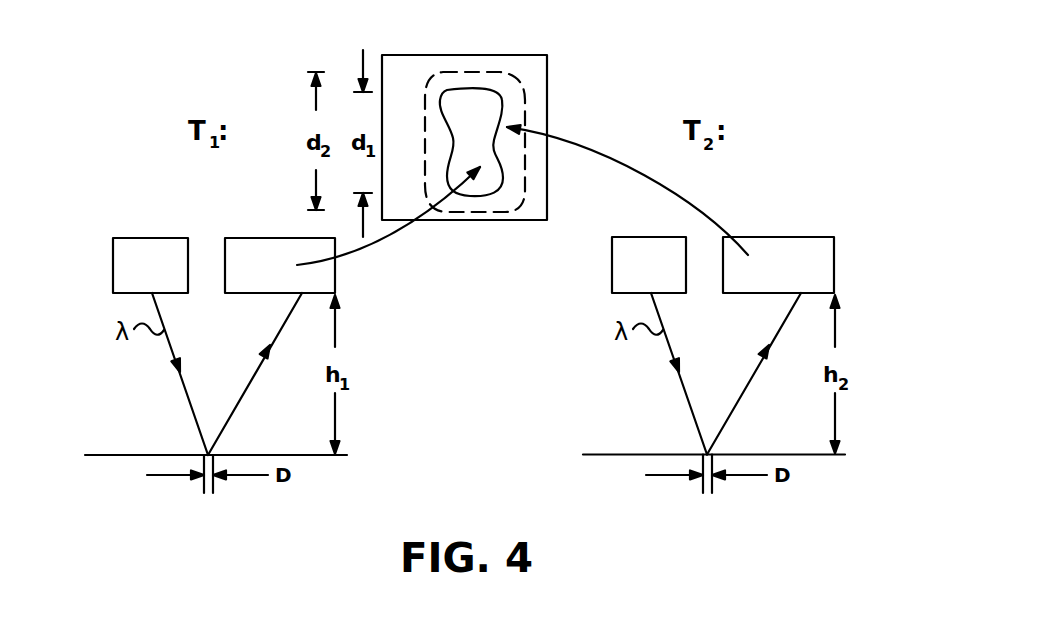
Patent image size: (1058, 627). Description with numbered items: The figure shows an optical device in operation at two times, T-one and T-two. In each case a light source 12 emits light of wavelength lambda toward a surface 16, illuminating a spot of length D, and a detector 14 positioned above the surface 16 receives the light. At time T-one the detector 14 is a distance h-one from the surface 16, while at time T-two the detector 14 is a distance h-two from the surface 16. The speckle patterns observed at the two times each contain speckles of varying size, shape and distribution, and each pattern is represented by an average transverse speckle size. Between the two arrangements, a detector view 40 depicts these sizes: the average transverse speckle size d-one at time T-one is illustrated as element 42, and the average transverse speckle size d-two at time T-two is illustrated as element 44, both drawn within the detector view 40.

The light source 12 is at (151, 260).
The detector 14 is at (260, 262).
The surface 16 is at (117, 453).
The detector view 40 is at (534, 200).
The average transverse speckle size d1 42 is at (483, 122).
The average transverse speckle size d2 44 is at (512, 102).